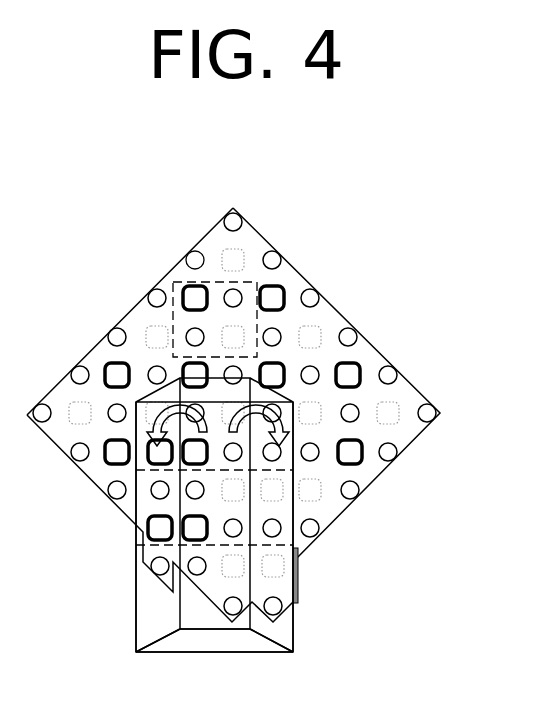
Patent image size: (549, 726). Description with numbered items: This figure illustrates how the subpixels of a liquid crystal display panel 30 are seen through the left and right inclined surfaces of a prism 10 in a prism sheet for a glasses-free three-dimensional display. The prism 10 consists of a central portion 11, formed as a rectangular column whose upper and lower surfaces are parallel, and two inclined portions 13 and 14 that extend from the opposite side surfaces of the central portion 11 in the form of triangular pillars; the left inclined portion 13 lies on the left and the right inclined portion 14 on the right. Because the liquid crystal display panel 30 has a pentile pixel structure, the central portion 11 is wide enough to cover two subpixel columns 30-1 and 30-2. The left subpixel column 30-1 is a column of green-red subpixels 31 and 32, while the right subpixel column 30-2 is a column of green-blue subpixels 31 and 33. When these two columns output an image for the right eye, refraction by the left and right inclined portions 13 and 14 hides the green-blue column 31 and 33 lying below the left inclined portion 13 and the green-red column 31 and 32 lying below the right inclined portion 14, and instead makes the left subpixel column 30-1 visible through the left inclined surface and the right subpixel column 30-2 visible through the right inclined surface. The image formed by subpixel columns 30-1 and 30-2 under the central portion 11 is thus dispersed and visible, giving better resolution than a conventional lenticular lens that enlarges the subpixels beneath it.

The prism 10 is at (312, 625).
The central portion 11 is at (203, 623).
The left inclined portion 13 is at (148, 625).
The right inclined portion 14 is at (282, 637).
The liquid crystal display panel 30 is at (432, 372).
The left subpixel column 30-1 is at (190, 243).
The right subpixel column 30-2 is at (250, 240).
The green subpixel 31 is at (153, 371).
The red subpixel 32 is at (283, 375).
The blue subpixel 33 is at (158, 327).